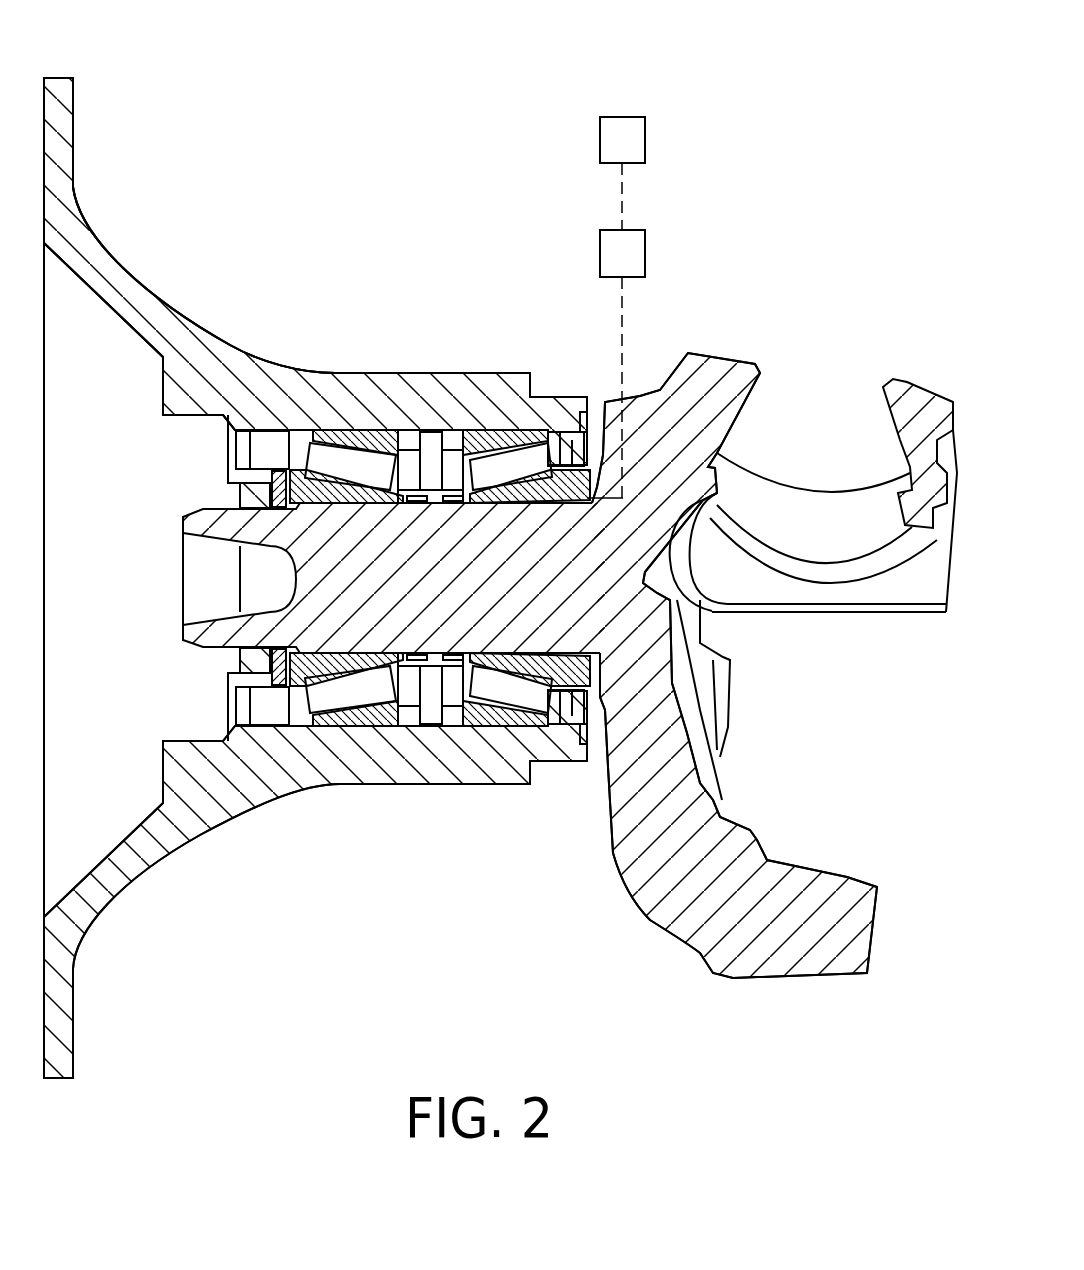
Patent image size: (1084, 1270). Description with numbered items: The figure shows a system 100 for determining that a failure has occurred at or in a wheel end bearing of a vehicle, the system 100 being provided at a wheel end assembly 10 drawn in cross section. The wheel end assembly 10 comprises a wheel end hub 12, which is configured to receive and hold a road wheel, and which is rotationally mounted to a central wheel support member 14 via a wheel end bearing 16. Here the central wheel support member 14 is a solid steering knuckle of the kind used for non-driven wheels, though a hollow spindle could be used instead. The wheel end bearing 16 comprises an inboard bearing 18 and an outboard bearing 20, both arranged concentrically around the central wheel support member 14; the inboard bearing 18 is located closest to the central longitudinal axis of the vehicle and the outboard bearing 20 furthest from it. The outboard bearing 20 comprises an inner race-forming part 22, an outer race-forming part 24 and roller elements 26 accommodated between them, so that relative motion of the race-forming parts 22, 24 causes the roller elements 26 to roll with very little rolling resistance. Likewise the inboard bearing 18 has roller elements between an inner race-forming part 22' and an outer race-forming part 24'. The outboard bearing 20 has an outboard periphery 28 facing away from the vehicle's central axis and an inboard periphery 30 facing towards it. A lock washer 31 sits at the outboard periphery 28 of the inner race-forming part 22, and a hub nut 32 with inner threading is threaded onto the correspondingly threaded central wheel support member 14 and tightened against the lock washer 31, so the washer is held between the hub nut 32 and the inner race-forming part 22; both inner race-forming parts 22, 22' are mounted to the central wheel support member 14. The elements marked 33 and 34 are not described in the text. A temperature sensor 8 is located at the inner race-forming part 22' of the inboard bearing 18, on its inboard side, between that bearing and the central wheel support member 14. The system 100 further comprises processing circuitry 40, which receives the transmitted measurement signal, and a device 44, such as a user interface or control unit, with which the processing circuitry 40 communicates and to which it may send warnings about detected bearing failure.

The system 100 is at (767, 57).
The wheel end assembly 10 is at (415, 190).
The temperature sensor 8 is at (560, 495).
The wheel end hub 12 is at (124, 275).
The central wheel support member 14 is at (500, 587).
The wheel end bearing 16 is at (222, 701).
The inboard bearing 18 is at (456, 713).
The outboard bearing 20 is at (410, 700).
The inner race-forming part 22 is at (354, 479).
The inner race-forming part 22' is at (635, 578).
The outer race-forming part 24 is at (350, 505).
The outer race-forming part 24' is at (518, 639).
The roller elements 26 is at (344, 462).
The outboard periphery 28 is at (268, 695).
The inboard periphery 30 is at (432, 668).
The lock washer 31 is at (266, 470).
The hub nut 32 is at (250, 470).
The lock nut 33 is at (265, 540).
The spacer ring 34 is at (286, 437).
The processing circuitry 40 is at (600, 255).
The device 44 is at (645, 138).